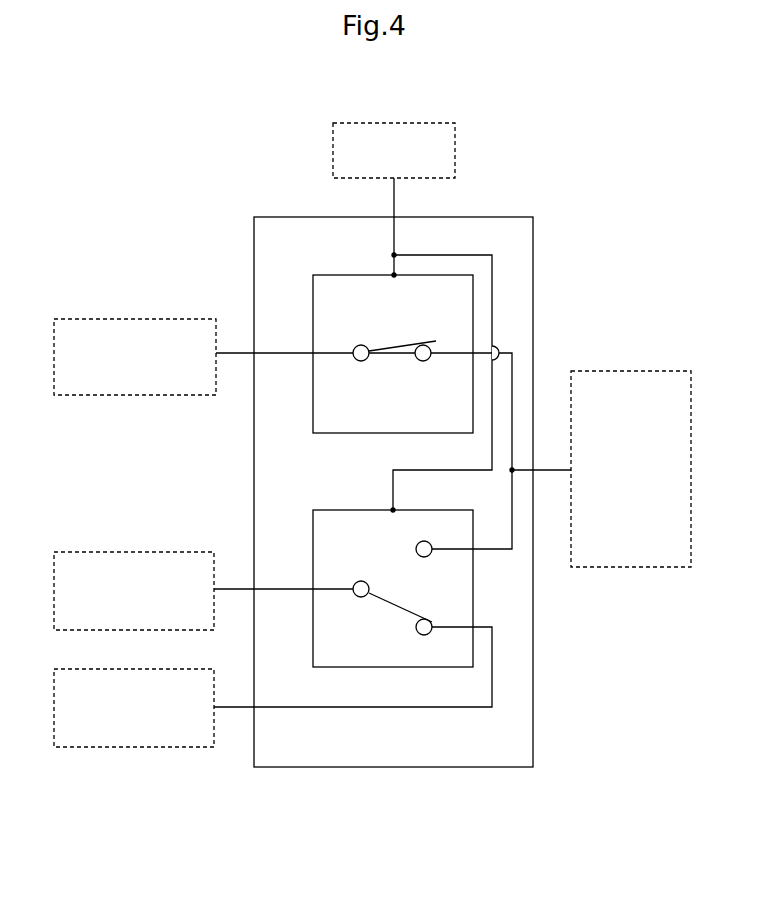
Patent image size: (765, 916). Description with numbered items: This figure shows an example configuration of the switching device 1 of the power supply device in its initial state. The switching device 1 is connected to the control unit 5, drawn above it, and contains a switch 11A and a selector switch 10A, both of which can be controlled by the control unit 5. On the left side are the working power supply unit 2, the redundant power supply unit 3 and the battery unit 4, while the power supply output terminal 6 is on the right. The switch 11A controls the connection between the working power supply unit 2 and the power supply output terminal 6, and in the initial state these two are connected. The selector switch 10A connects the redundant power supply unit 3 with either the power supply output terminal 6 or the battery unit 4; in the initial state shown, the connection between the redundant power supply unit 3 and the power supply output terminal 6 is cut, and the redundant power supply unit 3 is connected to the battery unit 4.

The switching device 1 is at (291, 768).
The working power supply unit 2 is at (178, 316).
The redundant power supply unit 3 is at (176, 549).
The battery unit 4 is at (176, 666).
The control unit 5 is at (415, 121).
The power supply output terminal 6 is at (632, 368).
The selector switch 10A is at (348, 668).
The switch 11A is at (350, 275).